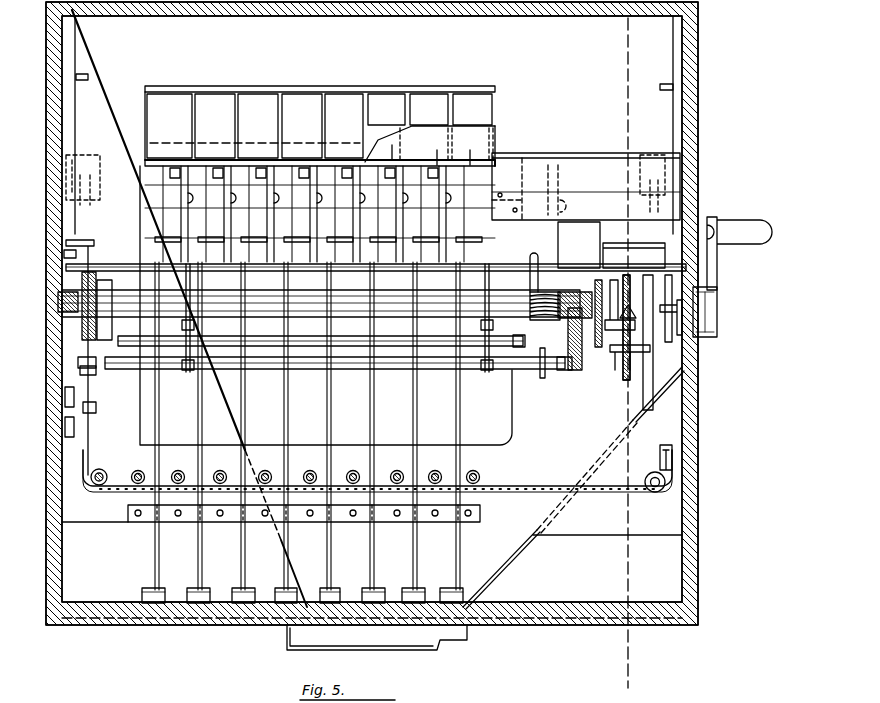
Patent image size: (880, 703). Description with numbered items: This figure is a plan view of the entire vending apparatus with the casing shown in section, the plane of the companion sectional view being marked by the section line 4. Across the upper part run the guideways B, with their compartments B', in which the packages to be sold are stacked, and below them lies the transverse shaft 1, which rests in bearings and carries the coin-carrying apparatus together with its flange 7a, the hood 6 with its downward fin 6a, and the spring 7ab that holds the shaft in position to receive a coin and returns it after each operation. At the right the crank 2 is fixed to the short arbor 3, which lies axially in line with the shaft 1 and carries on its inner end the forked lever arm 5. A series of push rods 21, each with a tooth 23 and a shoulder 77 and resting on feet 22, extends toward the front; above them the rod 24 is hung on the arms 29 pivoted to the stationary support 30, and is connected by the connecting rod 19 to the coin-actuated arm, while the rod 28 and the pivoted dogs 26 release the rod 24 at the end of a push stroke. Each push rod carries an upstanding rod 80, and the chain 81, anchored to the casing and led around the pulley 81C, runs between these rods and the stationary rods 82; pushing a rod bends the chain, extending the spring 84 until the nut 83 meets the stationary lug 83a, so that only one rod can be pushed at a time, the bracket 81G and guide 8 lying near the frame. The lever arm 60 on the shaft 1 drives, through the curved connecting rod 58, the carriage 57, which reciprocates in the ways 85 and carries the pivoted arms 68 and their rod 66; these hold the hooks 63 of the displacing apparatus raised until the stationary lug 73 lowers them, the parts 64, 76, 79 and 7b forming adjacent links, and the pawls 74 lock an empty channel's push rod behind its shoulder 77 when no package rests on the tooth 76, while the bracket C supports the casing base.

The shaft 1 is at (62, 300).
The crank 2 is at (717, 252).
The arbor or short shaft 3 is at (705, 338).
The section line 4 is at (628, 359).
The lever arm 5 is at (678, 336).
The hood 6 is at (625, 299).
The fin 6a is at (628, 300).
The flange 7a is at (646, 362).
The pawl 7b is at (612, 354).
The spring 7ab is at (534, 280).
The guide 8 is at (92, 484).
The connecting rod 19 is at (540, 370).
The push rods 21 is at (198, 551).
The type bar foot 22 is at (205, 590).
The tooth 23 is at (196, 388).
The rod 24 is at (180, 320).
The dogs 26 is at (130, 369).
The rod 28 is at (275, 345).
The arms 29 is at (488, 336).
The stationary support 30 is at (64, 254).
The carriage 57 is at (586, 202).
The curved connecting rod 58 is at (78, 352).
The lever arm 60 is at (62, 310).
The hook 63 is at (430, 145).
The hinge 64 is at (528, 168).
The rod or bar 66 is at (586, 178).
The pivoted arms 68 is at (365, 182).
The stationary lug 73 is at (88, 77).
The pawl 74 is at (488, 237).
The tooth 76 is at (630, 316).
The shoulder 77 is at (185, 263).
The lever 79 is at (630, 358).
The rods or lugs 80 is at (128, 504).
The chain 81 is at (596, 458).
The pulley 81C is at (92, 468).
The bracket 81G is at (88, 420).
The stationary rods 82 is at (182, 473).
The nut 83 is at (80, 370).
The stationary lug 83a is at (83, 408).
The spring 84 is at (100, 254).
The ways 85 is at (75, 126).
The guideways B is at (314, 126).
The tray compartment B' is at (319, 126).
The base bracket C is at (275, 640).